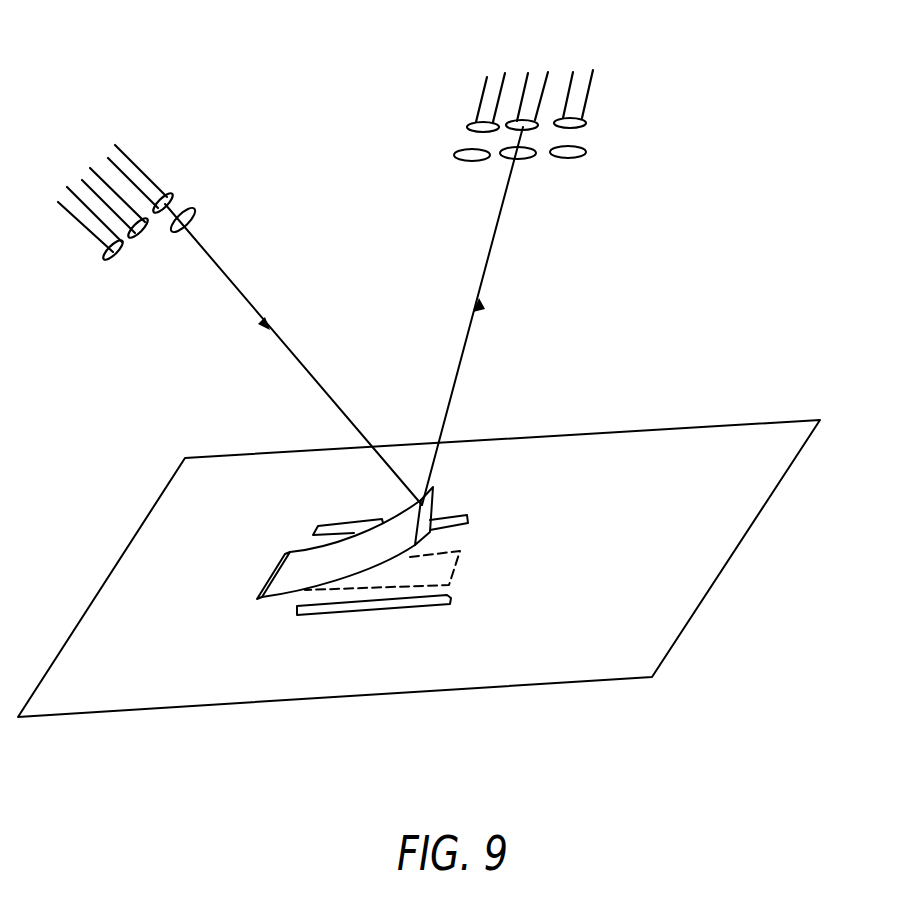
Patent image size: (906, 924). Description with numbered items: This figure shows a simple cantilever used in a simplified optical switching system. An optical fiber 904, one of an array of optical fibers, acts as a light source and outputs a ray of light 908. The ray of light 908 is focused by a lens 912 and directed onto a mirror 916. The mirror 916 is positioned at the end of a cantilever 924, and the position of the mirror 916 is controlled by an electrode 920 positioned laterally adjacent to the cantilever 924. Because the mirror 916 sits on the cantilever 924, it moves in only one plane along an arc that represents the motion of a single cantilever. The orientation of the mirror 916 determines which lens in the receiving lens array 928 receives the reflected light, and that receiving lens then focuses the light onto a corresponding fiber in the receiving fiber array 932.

The optical fiber 904 is at (143, 163).
The ray of light 908 is at (242, 292).
The lens 912 is at (193, 212).
The mirror 916 is at (430, 510).
The electrode 920 is at (450, 595).
The cantilever 924 is at (320, 566).
The receiving lens array 928 is at (585, 148).
The receiving fiber array 932 is at (585, 89).